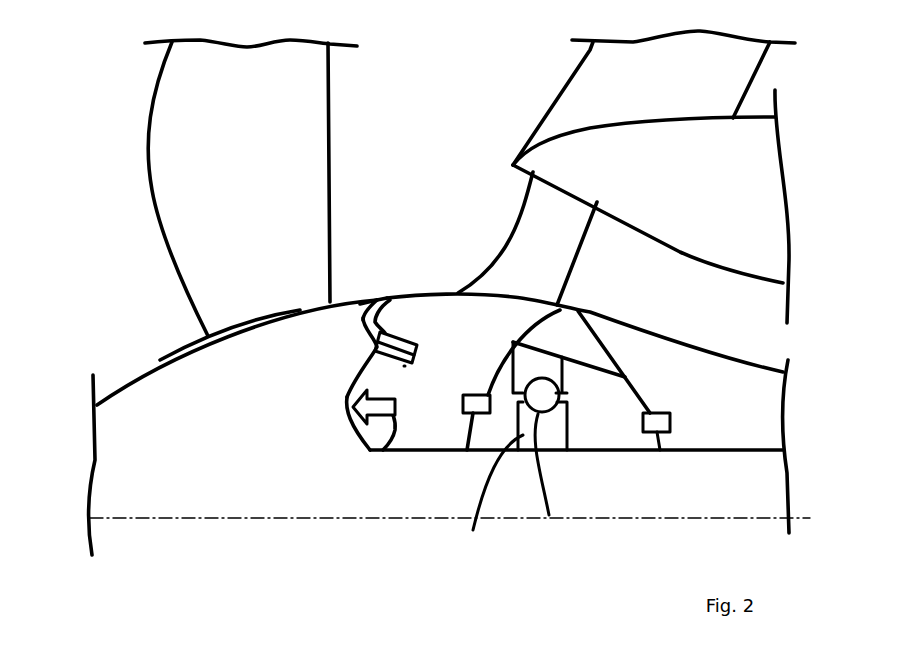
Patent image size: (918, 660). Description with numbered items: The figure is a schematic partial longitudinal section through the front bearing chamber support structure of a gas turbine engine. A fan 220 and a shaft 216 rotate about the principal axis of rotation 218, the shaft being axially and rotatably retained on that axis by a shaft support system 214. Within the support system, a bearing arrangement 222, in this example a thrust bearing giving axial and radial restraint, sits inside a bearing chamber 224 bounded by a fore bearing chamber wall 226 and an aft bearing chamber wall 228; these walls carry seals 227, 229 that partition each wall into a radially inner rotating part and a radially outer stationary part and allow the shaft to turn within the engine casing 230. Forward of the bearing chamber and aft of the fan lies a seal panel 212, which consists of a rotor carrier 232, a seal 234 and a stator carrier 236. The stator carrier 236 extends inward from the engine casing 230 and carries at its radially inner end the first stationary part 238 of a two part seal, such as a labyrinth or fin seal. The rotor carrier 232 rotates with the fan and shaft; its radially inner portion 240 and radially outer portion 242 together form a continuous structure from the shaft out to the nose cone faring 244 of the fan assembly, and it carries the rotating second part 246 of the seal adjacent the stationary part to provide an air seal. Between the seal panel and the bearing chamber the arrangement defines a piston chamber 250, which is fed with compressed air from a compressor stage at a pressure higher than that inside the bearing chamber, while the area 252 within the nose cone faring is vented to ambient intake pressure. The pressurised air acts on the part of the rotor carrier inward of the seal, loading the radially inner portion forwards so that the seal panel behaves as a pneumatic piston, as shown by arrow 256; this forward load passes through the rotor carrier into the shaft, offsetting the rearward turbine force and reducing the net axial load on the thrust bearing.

The seal panel 212 is at (323, 381).
The shaft support system 214 is at (527, 322).
The shaft 216 is at (220, 561).
The principal axis of rotation 218 is at (732, 505).
The fan 220 is at (212, 187).
The bearing arrangement 222 is at (558, 458).
The bearing chamber 224 is at (578, 404).
The fore bearing chamber wall 226 is at (468, 432).
The seal 227 is at (468, 397).
The aft bearing chamber wall 228 is at (650, 413).
The seal 229 is at (650, 432).
The engine casing 230 is at (423, 296).
The rotor carrier 232 is at (338, 412).
The seal 234 is at (357, 343).
The stator carrier 236 is at (377, 300).
The first stationary part of two part seal 238 is at (395, 329).
The radially inner portion of rotor carrier 240 is at (357, 438).
The radially outer portion of rotor carrier 242 is at (372, 300).
The nose cone faring 244 is at (198, 343).
The rotating second part of two part seal 246 is at (405, 366).
The piston chamber 250 is at (468, 342).
The area within fan cone faring 252 is at (166, 428).
The arrow 256 is at (383, 451).